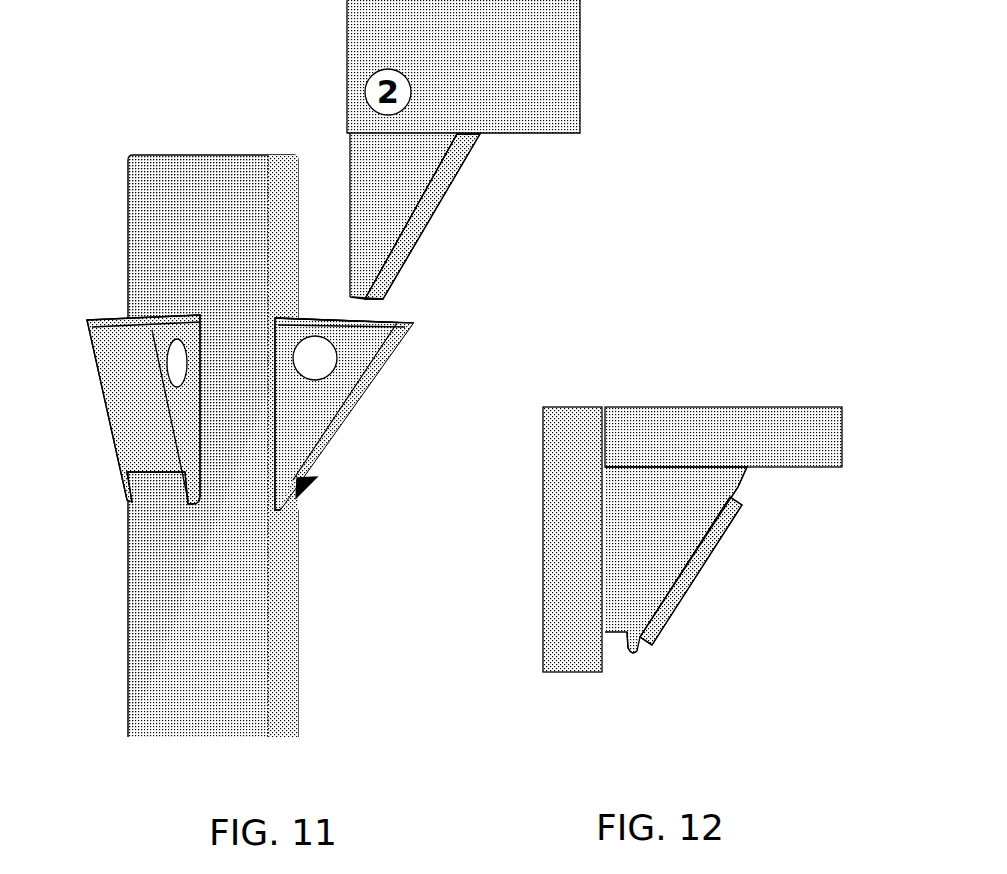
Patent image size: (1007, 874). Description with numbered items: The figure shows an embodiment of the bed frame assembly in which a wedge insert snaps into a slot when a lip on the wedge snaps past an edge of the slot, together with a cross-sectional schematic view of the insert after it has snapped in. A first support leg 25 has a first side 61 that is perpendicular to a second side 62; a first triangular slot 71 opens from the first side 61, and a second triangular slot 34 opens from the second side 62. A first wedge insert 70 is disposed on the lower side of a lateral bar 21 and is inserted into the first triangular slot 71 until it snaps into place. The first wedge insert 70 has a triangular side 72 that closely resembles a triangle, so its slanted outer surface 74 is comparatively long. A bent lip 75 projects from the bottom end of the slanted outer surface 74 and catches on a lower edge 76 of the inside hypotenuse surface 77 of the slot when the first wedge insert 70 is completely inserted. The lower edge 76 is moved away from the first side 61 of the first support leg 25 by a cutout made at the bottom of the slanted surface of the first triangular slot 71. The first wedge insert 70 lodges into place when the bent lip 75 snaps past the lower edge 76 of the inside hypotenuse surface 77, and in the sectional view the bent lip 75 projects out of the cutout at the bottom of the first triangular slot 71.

In FIG. 11, the first support leg 25 is at (167, 155).
In FIG. 12, the first support leg 25 is at (573, 407).
In FIG. 12, the lateral bar 21 is at (750, 407).
In FIG. 11, the second triangular slot 34 is at (90, 320).
In FIG. 11, the first wedge insert 70 is at (417, 185).
In FIG. 12, the first wedge insert 70 is at (651, 611).
In FIG. 11, the first triangular slot 71 is at (367, 395).
In FIG. 12, the first triangular slot 71 is at (707, 560).
In FIG. 11, the triangular side 72 is at (403, 216).
In FIG. 11, the slanted outer surface 74 is at (448, 201).
In FIG. 12, the slanted outer surface 74 is at (741, 488).
In FIG. 11, the bent lip 75 is at (390, 297).
In FIG. 12, the bent lip 75 is at (628, 658).
In FIG. 11, the lower edge 76 is at (320, 480).
In FIG. 12, the lower edge 76 is at (648, 651).
In FIG. 11, the inside hypotenuse surface 77 is at (391, 317).
In FIG. 12, the inside hypotenuse surface 77 is at (679, 571).
In FIG. 11, the first side 61 is at (283, 446).
In FIG. 11, the second side 62 is at (170, 448).